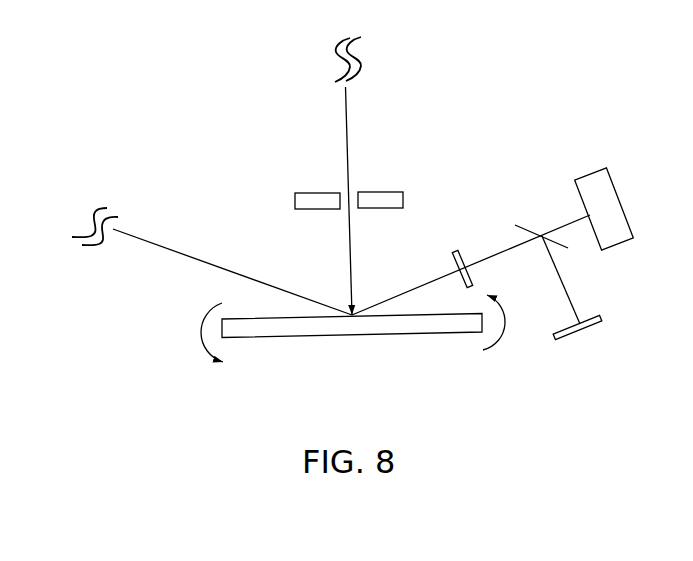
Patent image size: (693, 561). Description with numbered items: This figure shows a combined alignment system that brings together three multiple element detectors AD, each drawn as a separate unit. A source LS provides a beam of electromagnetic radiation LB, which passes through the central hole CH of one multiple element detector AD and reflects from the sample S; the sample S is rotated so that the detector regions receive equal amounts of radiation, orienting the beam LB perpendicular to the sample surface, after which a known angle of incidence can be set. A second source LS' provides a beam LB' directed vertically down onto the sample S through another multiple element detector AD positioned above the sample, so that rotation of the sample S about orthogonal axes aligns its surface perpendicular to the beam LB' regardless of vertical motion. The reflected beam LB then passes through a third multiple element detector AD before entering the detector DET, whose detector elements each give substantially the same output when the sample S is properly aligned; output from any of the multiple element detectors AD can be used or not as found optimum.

The source LS is at (81, 220).
The source LS' is at (366, 57).
The beam of electromagnetic radiation LB is at (331, 268).
The beam of electromagnetic radiation LB' is at (306, 201).
The central hole CH is at (352, 188).
The multiple element detector AD is at (406, 189).
The sample S is at (379, 336).
The detector DET is at (587, 172).